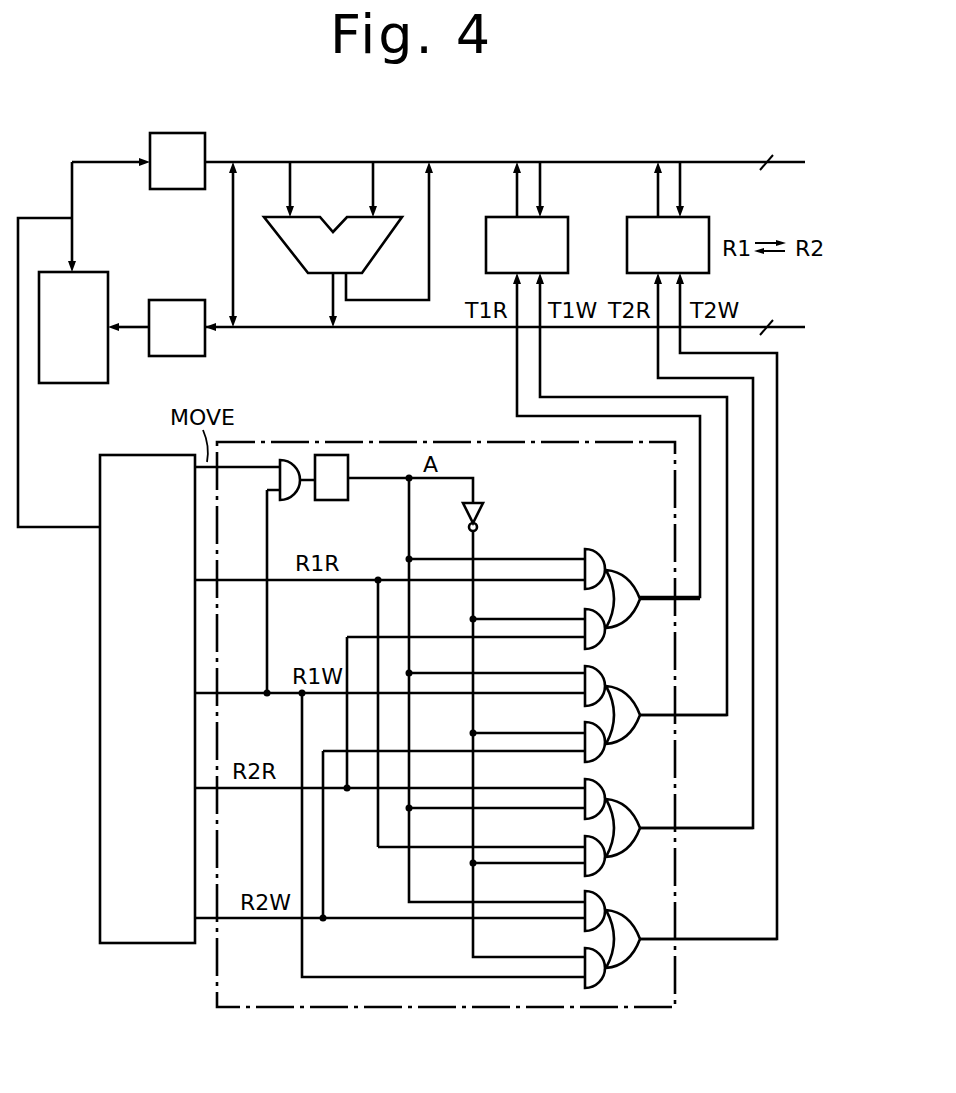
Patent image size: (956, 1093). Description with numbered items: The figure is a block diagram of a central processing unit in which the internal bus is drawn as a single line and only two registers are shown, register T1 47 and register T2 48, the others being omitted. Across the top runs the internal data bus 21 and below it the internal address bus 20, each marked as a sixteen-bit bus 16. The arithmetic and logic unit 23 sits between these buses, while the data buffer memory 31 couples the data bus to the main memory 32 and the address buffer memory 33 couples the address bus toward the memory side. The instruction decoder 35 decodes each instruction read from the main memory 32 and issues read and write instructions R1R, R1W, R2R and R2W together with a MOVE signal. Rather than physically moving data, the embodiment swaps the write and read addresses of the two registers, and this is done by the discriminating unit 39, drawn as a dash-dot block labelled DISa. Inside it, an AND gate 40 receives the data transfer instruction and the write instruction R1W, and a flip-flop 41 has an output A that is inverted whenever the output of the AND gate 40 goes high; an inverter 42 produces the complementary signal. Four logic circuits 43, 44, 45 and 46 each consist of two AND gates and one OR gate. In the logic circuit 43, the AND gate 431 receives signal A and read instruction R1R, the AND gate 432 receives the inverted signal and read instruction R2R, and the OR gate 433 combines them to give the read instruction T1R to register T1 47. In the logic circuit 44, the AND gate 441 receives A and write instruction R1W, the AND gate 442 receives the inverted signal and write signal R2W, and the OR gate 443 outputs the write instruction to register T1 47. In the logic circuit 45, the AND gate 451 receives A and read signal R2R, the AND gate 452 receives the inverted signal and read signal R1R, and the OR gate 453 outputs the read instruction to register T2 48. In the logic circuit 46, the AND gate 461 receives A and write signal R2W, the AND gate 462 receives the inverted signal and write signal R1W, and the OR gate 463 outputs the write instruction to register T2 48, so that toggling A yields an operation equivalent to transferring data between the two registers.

The 16-bit bus 16 is at (767, 256).
The internal address bus 20 is at (366, 330).
The internal data bus 21 is at (470, 160).
The arithmetic and logic unit 23 is at (283, 243).
The data buffer memory 31 is at (190, 133).
The main memory 32 is at (70, 383).
The address buffer memory 33 is at (182, 300).
The instruction decoder 35 is at (100, 591).
The discriminating unit 39 is at (400, 1010).
The AND gate 40 is at (290, 458).
The flip-flop 41 is at (333, 455).
The inverter 42 is at (480, 511).
The logic circuit 43 is at (613, 564).
The AND gate 431 is at (592, 548).
The AND gate 432 is at (577, 612).
The OR gate 433 is at (641, 607).
The logic circuit 44 is at (613, 685).
The AND gate 441 is at (580, 670).
The AND gate 442 is at (580, 726).
The OR gate 443 is at (641, 724).
The logic circuit 45 is at (613, 800).
The AND gate 451 is at (580, 783).
The AND gate 452 is at (580, 839).
The OR gate 453 is at (641, 822).
The logic circuit 46 is at (613, 912).
The AND gate 461 is at (580, 895).
The AND gate 462 is at (580, 951).
The OR gate 463 is at (641, 931).
The register T1 47 is at (562, 216).
The register T2 48 is at (703, 216).